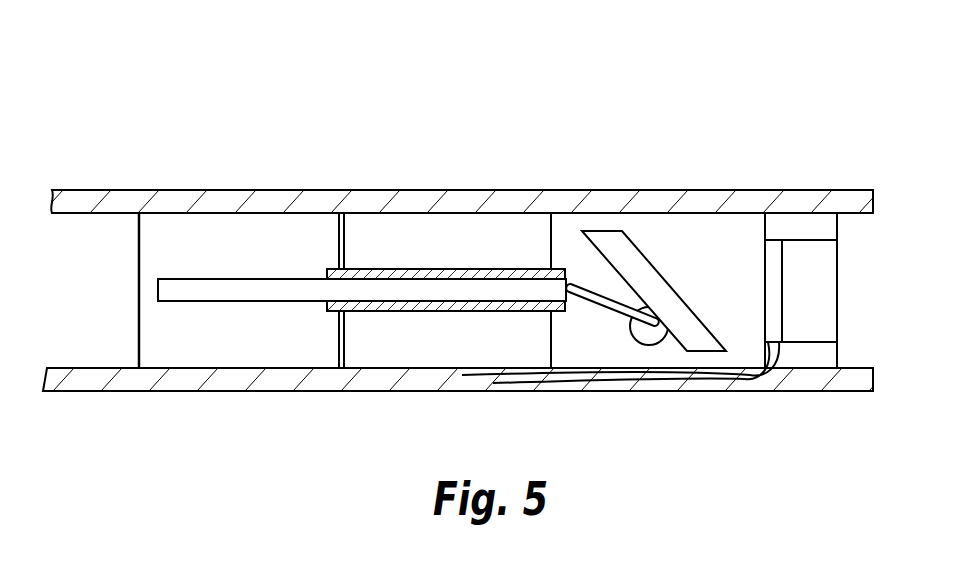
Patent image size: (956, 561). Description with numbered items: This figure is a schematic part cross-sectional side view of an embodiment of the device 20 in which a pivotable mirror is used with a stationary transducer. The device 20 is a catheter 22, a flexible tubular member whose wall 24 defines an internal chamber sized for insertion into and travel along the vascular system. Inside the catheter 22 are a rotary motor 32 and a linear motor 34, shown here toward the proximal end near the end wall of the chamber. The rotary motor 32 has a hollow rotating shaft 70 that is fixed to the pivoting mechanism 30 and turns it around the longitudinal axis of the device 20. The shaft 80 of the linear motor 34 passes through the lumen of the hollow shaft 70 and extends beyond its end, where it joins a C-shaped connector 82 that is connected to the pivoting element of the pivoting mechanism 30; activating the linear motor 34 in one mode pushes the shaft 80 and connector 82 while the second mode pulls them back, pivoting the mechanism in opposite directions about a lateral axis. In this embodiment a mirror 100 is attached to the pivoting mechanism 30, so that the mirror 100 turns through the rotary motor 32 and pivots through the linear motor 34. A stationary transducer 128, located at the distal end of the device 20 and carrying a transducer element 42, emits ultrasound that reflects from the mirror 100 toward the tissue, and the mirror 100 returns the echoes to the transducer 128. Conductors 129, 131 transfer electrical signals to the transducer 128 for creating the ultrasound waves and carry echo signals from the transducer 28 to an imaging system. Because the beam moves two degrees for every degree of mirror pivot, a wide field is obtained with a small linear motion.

The device 20 is at (480, 248).
The catheter 22 is at (420, 205).
The wall 24 is at (822, 190).
The transducer 28 is at (871, 271).
The pivoting mechanism 30 is at (628, 286).
The rotary motor 32 is at (379, 237).
The linear motor 34 is at (221, 233).
The transducer element 42 is at (770, 317).
The rotating shaft 70 is at (442, 305).
The shaft 80 is at (210, 293).
The C-shaped connector 82 is at (608, 310).
The mirror 100 is at (620, 252).
The stationary transducer 128 is at (813, 239).
The conductor 129 is at (630, 375).
The conductor 131 is at (727, 388).